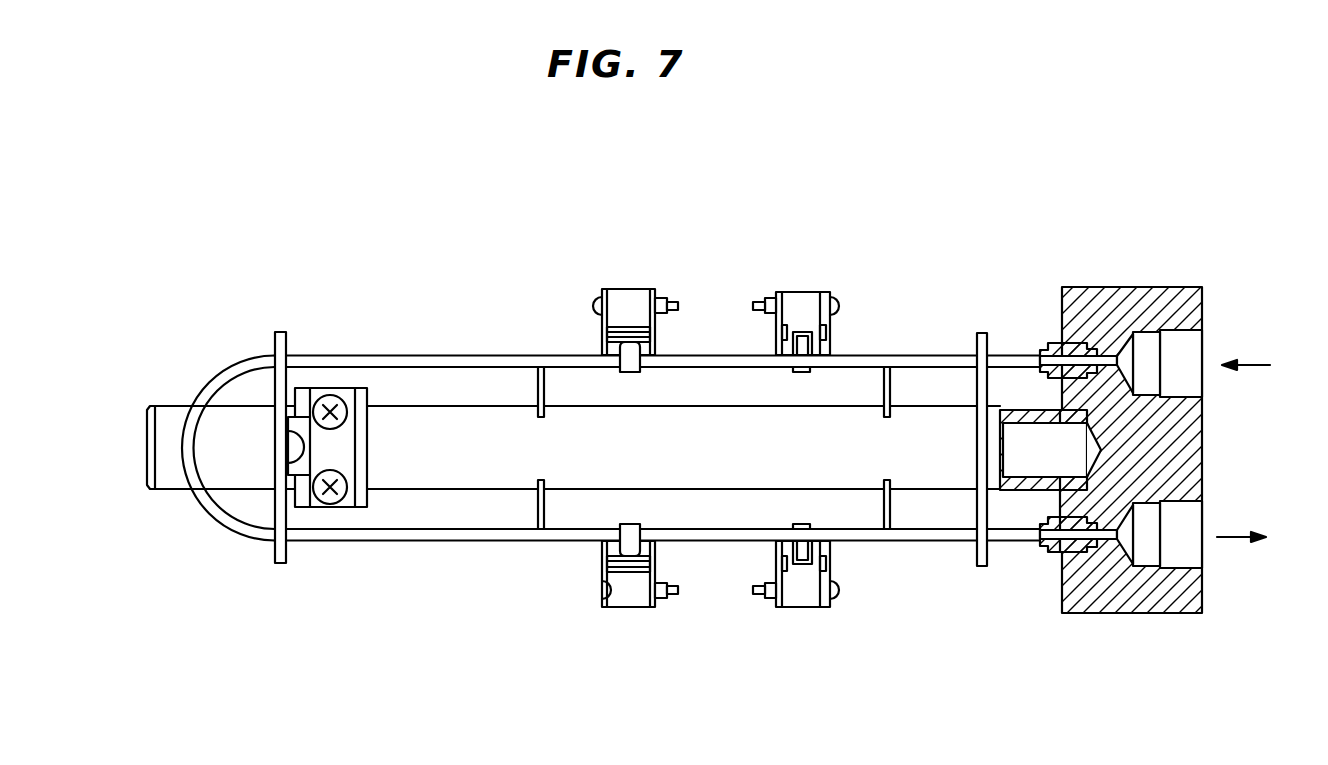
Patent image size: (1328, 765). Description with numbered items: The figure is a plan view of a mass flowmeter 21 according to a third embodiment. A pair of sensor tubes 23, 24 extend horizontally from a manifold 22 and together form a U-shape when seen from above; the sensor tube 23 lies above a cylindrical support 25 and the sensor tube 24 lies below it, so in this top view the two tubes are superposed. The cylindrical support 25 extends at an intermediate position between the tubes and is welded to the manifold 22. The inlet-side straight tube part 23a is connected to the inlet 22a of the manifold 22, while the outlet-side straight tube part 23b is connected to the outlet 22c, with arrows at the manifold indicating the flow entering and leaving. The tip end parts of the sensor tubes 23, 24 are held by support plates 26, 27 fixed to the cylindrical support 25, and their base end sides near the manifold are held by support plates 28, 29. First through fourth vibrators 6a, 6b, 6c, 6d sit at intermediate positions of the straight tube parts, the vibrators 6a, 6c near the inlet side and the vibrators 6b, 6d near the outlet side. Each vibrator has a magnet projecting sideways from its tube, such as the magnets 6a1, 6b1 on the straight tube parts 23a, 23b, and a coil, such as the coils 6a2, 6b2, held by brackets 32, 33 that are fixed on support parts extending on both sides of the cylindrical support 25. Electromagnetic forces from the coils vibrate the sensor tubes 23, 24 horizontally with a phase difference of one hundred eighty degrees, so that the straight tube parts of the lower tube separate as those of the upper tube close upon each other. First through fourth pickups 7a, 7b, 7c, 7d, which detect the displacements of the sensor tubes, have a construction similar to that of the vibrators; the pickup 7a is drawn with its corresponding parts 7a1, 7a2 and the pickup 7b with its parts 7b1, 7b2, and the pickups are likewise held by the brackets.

The mass flowmeter 21 is at (812, 168).
The manifold 22 is at (1138, 455).
The inlet 22a is at (1195, 345).
The outlet 22c is at (1203, 558).
The sensor tube 23 is at (606, 448).
The sensor tube 24 is at (611, 435).
The straight tube part 23a is at (472, 354).
The straight tube part 23b is at (508, 543).
The cylindrical support 25 is at (162, 482).
The support plate 26 is at (238, 423).
The support plate 27 is at (277, 382).
The support plate 28 is at (987, 492).
The support plate 29 is at (975, 567).
The bracket 32 is at (656, 345).
The bracket 33 is at (657, 580).
The first vibrator 6a is at (595, 304).
The third vibrator 6c is at (595, 321).
The magnet 6a1 is at (615, 356).
The coil 6a2 is at (600, 330).
The second vibrator 6b is at (602, 584).
The fourth vibrator 6d is at (602, 561).
The magnet 6b1 is at (614, 540).
The coil 6b2 is at (602, 570).
The first pickup 7a is at (805, 304).
The third pickup 7c is at (773, 321).
The driver core 7a1 is at (792, 350).
The driver coil 7a2 is at (772, 333).
The second pickup 7b is at (805, 589).
The fourth pickup 7d is at (779, 569).
The driver core 7b1 is at (793, 545).
The driver coil 7b2 is at (775, 568).